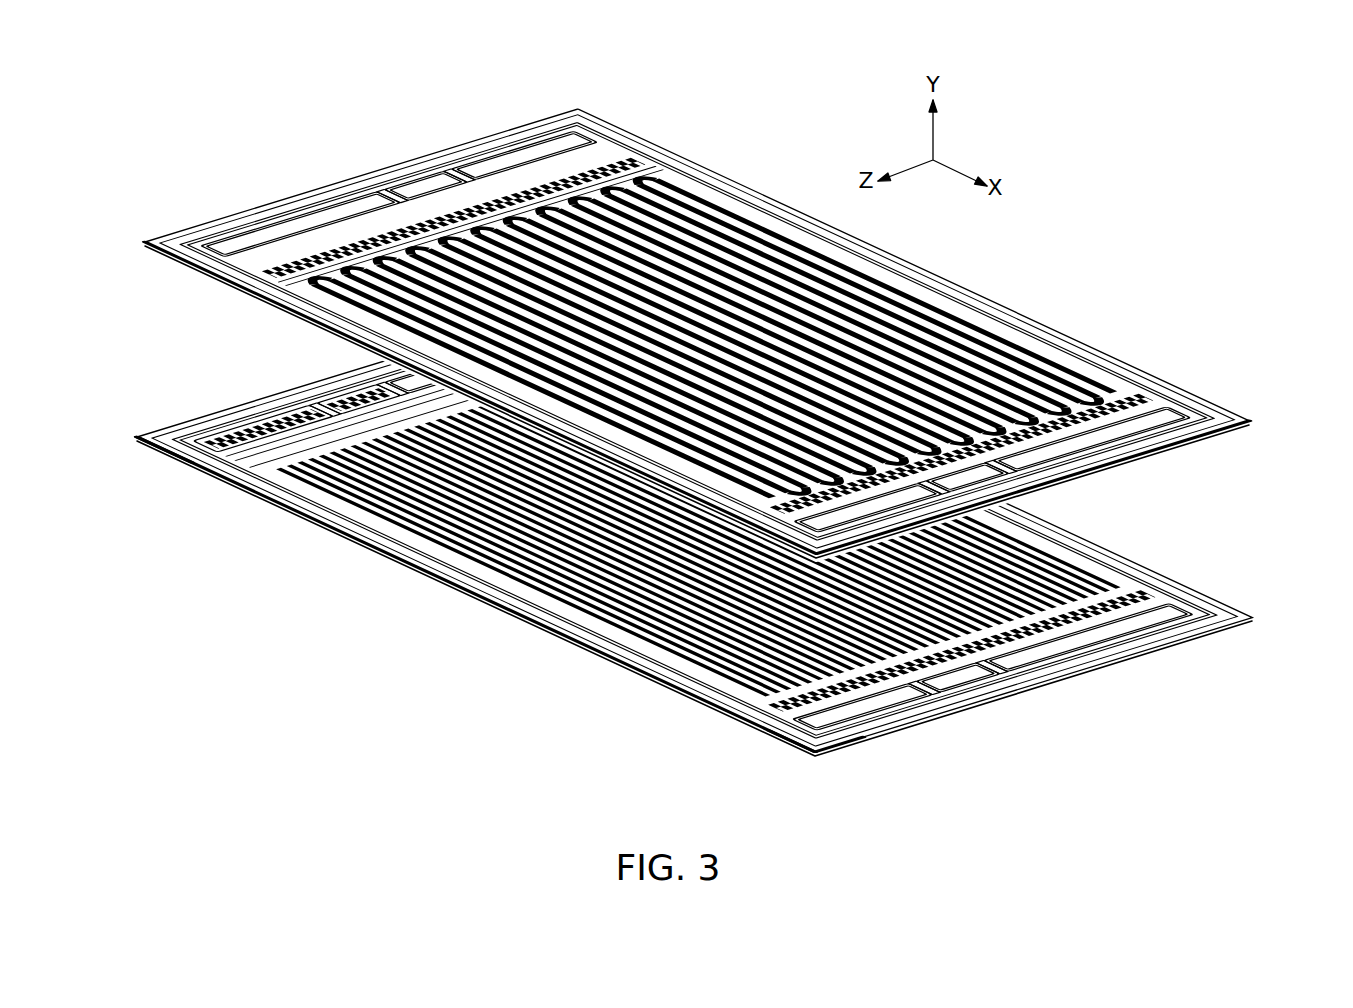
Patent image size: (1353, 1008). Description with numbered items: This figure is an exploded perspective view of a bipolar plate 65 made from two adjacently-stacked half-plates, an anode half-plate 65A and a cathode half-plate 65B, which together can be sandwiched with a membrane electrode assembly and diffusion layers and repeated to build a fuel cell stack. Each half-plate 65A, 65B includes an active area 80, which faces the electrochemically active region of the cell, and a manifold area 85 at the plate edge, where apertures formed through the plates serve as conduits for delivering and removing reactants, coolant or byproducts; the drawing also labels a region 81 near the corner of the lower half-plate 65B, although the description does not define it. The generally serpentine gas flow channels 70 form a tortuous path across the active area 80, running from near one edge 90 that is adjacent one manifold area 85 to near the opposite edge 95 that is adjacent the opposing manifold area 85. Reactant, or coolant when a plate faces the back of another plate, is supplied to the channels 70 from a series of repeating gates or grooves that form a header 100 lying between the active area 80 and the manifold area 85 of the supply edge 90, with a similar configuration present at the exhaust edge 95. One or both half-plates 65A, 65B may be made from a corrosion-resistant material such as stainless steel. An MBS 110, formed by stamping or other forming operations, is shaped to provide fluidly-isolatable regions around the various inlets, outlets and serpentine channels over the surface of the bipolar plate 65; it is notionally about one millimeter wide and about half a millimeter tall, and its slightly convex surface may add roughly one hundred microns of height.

The bipolar plate 65 is at (688, 443).
The anode half-plate 65A is at (713, 323).
The cathode half-plate 65B is at (731, 550).
The serpentine gas flow channels 70 is at (740, 253).
The active area 80 is at (203, 470).
The corner edge portion 81 is at (143, 450).
The manifold area 85 is at (810, 753).
The edge 90 is at (290, 191).
The opposite edge 95 is at (1122, 466).
The header 100 is at (242, 230).
The MBS 110 is at (392, 192).